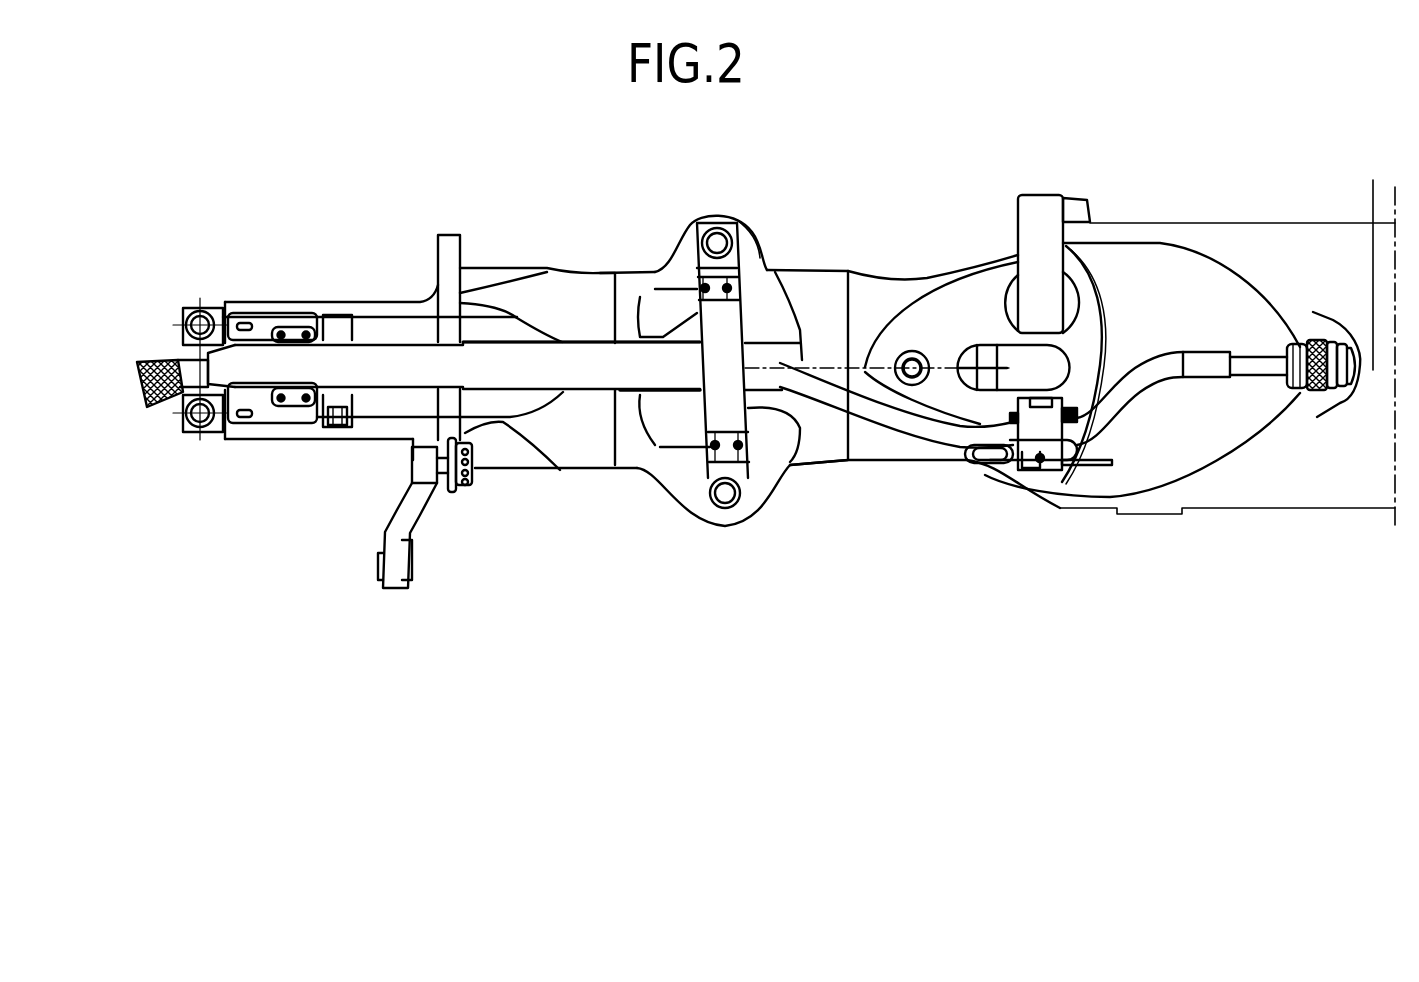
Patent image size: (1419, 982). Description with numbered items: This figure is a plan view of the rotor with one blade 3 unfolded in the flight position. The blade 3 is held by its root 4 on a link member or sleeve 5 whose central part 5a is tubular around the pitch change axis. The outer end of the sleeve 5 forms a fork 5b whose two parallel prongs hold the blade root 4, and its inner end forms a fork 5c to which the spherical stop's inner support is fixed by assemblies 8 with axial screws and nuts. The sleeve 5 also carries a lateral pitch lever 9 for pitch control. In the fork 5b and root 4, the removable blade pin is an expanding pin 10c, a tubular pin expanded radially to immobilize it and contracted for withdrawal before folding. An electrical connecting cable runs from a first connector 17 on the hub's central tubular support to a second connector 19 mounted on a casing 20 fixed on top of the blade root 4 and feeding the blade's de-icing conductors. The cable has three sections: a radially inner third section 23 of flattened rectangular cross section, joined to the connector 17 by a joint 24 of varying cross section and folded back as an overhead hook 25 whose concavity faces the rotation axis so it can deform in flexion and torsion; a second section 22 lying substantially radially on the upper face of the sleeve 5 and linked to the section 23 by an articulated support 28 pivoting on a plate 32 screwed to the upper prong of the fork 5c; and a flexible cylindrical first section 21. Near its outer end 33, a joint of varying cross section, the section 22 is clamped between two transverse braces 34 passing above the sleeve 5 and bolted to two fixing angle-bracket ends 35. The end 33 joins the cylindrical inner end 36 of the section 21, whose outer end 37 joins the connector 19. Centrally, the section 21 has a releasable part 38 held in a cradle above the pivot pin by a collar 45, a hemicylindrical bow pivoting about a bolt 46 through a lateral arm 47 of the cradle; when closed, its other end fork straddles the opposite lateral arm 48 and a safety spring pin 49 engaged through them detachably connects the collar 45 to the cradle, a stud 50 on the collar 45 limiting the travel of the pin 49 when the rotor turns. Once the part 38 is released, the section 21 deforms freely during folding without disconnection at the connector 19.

The blade 3 is at (1288, 222).
The blade root 4 is at (1005, 241).
The sleeve 5 is at (587, 270).
The central part of the sleeve 5a is at (783, 267).
The fork at radially outer end of sleeve 5b is at (1078, 330).
The fork at radially inner end of sleeve 5c is at (321, 306).
The assemblies with axial screws and nuts 8 is at (188, 309).
The pitch lever 9 is at (397, 575).
The expanding pin 10c is at (1038, 310).
The first connector 17 is at (148, 408).
The second connector 19 is at (1327, 390).
The casing 20 is at (1376, 335).
The first section of cable 21 is at (1175, 377).
The second section of cable 22 is at (590, 393).
The third section of cable 23 is at (268, 358).
The joint of varying cross section 24 is at (198, 433).
The overhead hook 25 is at (402, 373).
The articulated support 28 is at (338, 330).
The plate 32 is at (290, 328).
The radially outer end of second section 33 is at (765, 378).
The transverse braces 34 is at (722, 380).
The fixing angle-bracket ends 35 is at (700, 260).
The radially inner end of first section 36 is at (805, 378).
The radially outer end of first section 37 is at (1264, 363).
The releasable part 38 is at (997, 450).
The collar 45 is at (1047, 423).
The bolt 46 is at (1103, 425).
The lateral arm of the cradle 47 is at (1042, 395).
The lateral arm of the cradle 48 is at (1041, 462).
The safety spring pin 49 is at (1107, 466).
The stud 50 is at (1030, 421).